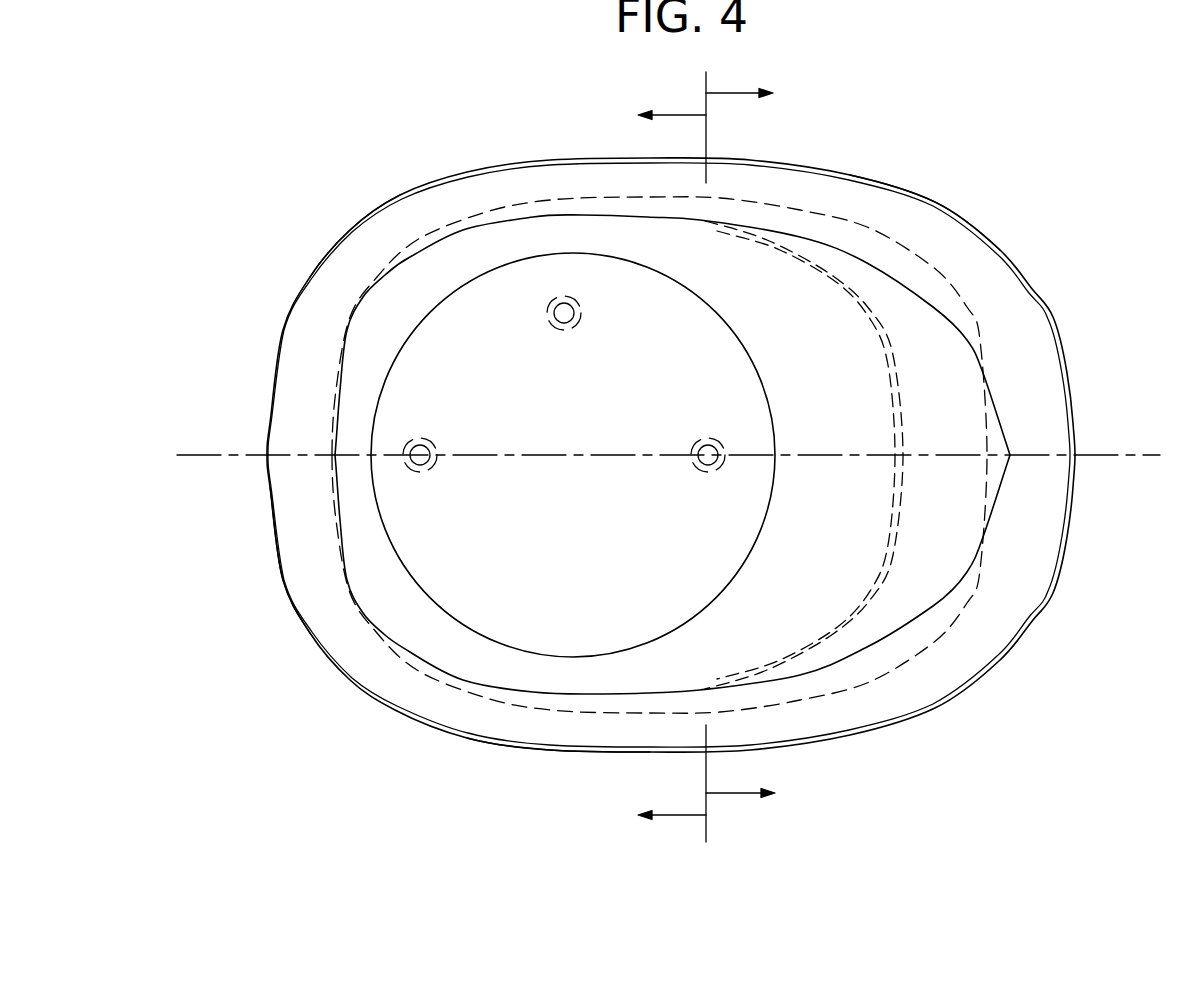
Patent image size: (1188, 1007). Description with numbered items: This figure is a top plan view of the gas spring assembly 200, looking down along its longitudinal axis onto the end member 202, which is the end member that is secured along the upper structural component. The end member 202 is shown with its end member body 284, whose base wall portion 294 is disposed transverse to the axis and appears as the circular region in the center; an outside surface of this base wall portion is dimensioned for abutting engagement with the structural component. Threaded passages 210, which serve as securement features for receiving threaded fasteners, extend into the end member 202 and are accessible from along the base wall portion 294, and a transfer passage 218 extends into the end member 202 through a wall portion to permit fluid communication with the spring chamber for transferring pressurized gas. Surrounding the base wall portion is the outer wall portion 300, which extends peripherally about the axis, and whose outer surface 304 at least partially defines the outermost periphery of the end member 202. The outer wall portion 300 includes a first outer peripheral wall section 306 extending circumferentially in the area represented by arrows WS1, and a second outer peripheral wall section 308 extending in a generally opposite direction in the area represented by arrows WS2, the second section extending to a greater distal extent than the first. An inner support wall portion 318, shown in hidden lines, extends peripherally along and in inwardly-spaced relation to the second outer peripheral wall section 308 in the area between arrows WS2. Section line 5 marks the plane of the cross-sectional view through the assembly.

The gas spring assembly 200 is at (1037, 215).
The end member 202 is at (1050, 297).
The threaded passages 210 is at (425, 470).
The transfer passage 218 is at (577, 322).
The end member body 284 is at (423, 697).
The base wall portion 294 is at (484, 300).
The outer wall portion 300 is at (585, 753).
The outer surface 304 is at (295, 604).
The first outer peripheral wall section 306 is at (348, 230).
The second outer peripheral wall section 308 is at (935, 202).
The inner support wall portion 318 is at (877, 602).
The arrows WS1 is at (678, 115).
The arrows WS2 is at (740, 93).
The section line 5- 5 is at (177, 455).